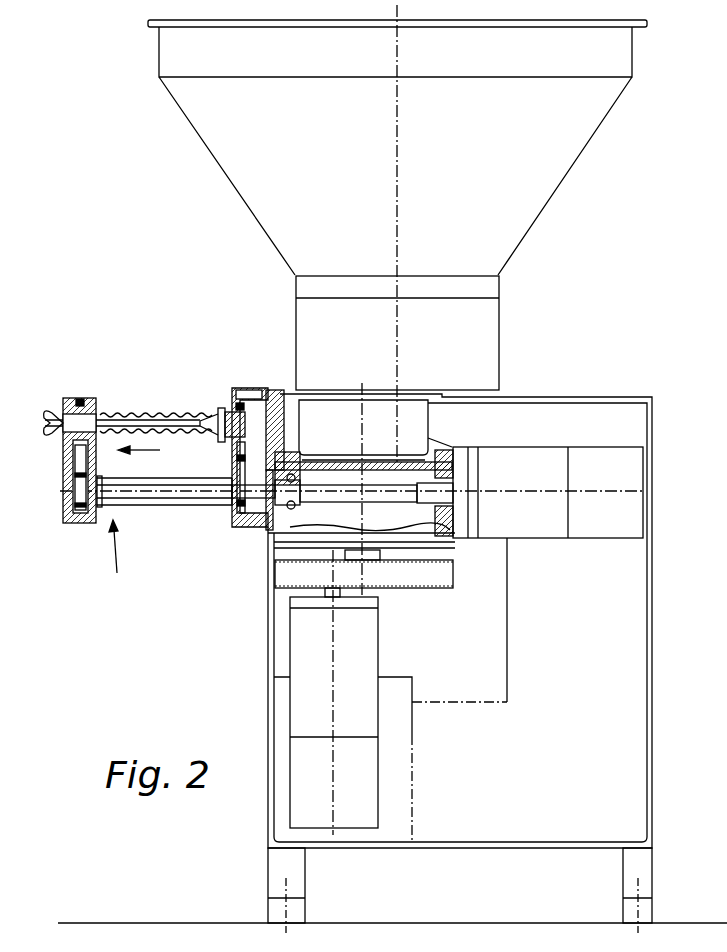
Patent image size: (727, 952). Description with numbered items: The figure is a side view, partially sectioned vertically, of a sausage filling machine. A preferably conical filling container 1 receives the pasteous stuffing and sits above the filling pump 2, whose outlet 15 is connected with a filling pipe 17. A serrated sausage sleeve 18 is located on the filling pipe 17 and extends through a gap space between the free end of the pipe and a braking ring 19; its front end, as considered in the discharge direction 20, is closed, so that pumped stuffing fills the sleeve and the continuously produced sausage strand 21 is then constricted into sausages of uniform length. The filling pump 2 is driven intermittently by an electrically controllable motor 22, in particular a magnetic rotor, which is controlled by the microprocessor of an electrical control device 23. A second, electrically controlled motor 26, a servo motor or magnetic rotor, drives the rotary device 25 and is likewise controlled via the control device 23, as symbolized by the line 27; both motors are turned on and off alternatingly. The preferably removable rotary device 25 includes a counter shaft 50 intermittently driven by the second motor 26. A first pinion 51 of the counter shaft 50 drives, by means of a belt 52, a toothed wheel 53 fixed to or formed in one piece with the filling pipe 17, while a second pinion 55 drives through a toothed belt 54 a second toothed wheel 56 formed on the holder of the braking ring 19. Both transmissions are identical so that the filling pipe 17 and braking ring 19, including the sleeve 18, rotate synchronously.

The filling container 1 is at (520, 216).
The filling pump 2 is at (417, 435).
The outlet 15 is at (274, 412).
The filling pipe 17 is at (208, 418).
The serrated sausage sleeve 18 is at (124, 412).
The braking ring 19 is at (66, 410).
The discharge direction 20 is at (148, 452).
The sausage strand 21 is at (58, 433).
The motor 22 is at (367, 663).
The electrical control device 23 is at (413, 809).
The rotary device 25 is at (126, 557).
The second motor 26 is at (613, 455).
The line 27 is at (510, 597).
The counter shaft 50 is at (188, 497).
The first pinion 51 is at (246, 520).
The belt 52 is at (238, 455).
The toothed wheel 53 is at (241, 403).
The belt 54 is at (79, 466).
The second pinion 55 is at (82, 507).
The second toothed wheel 56 is at (80, 399).